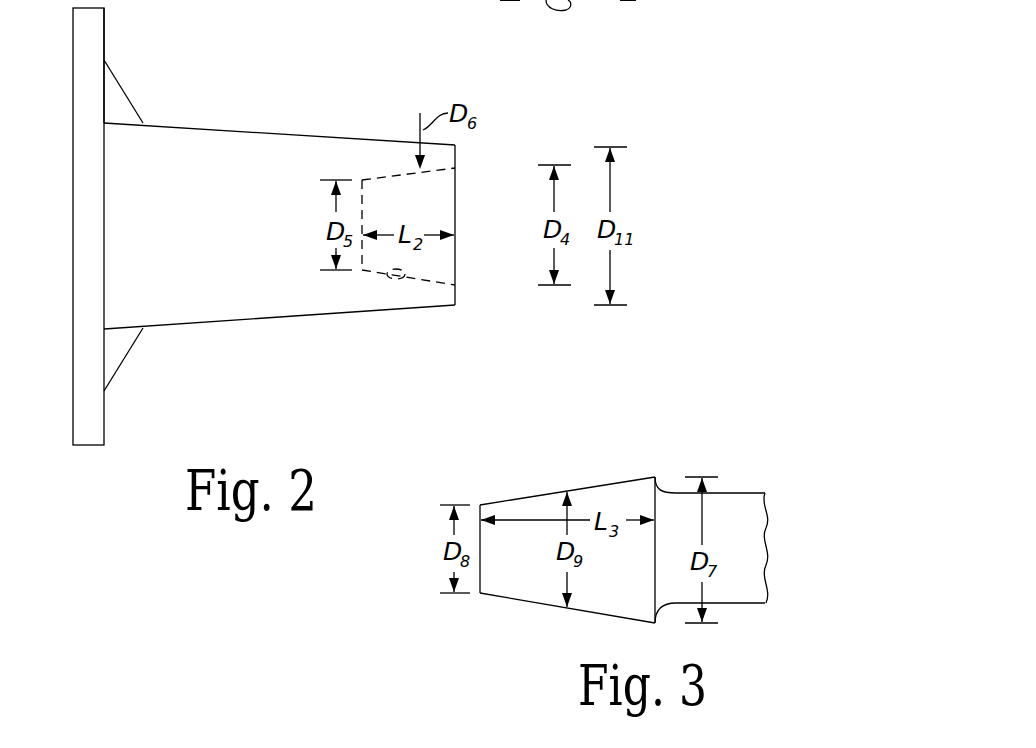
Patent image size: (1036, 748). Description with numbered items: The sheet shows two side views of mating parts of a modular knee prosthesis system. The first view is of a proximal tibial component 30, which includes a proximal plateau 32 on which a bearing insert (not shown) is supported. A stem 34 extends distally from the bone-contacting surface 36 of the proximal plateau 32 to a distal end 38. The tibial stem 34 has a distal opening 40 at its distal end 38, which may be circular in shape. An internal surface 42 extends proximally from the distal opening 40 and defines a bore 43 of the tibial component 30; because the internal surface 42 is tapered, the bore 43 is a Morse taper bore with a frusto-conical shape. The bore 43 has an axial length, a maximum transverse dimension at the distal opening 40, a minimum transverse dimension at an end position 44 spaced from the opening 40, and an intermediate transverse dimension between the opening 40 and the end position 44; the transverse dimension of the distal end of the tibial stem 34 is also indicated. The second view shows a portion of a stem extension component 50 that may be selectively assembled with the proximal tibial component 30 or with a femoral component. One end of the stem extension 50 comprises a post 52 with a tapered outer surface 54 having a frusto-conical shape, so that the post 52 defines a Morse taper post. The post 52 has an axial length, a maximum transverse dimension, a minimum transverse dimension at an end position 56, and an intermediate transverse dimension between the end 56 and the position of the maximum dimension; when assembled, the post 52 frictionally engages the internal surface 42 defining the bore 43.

In FIG. 2, the proximal tibial component 30 is at (105, 33).
In FIG. 2, the proximal plateau 32 is at (72, 205).
In FIG. 2, the stem 34 is at (250, 130).
In FIG. 2, the bone-contacting surface 36 is at (105, 283).
In FIG. 2, the distal end 38 is at (456, 306).
In FIG. 2, the distal opening 40 is at (457, 181).
In FIG. 2, the internal surface 42 is at (398, 280).
In FIG. 2, the bore 43 is at (440, 265).
In FIG. 2, the end position 44 is at (361, 180).
In FIG. 3, the stem extension component 50 is at (740, 492).
In FIG. 3, the post 52 is at (534, 493).
In FIG. 3, the tapered outer surface 54 is at (508, 585).
In FIG. 3, the end position 56 is at (480, 505).